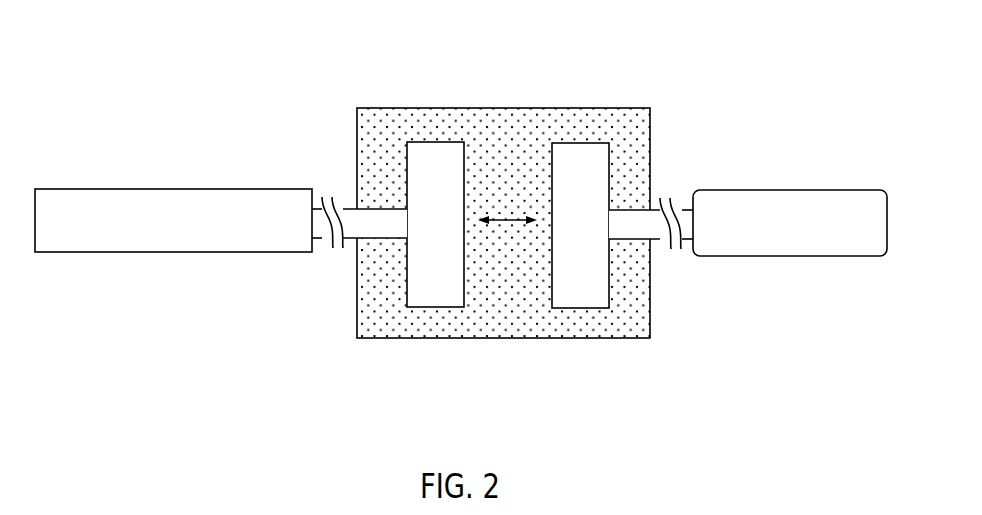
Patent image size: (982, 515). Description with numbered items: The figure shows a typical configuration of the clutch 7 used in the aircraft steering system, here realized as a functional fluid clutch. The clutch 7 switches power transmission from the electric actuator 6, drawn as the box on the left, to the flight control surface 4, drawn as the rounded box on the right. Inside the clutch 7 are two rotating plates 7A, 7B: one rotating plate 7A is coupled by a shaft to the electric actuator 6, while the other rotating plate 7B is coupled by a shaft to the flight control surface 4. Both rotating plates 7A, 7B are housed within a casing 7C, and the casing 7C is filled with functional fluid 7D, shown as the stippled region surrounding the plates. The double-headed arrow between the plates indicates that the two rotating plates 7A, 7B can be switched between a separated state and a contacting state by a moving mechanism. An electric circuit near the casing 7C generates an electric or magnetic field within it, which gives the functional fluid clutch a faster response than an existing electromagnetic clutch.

The flight control surface 4 is at (787, 256).
The electric actuator 6 is at (183, 252).
The clutch 7 is at (502, 216).
The rotating plate 7A is at (437, 142).
The rotating plate 7B is at (578, 143).
The casing 7C is at (415, 339).
The functional fluid 7D is at (525, 318).